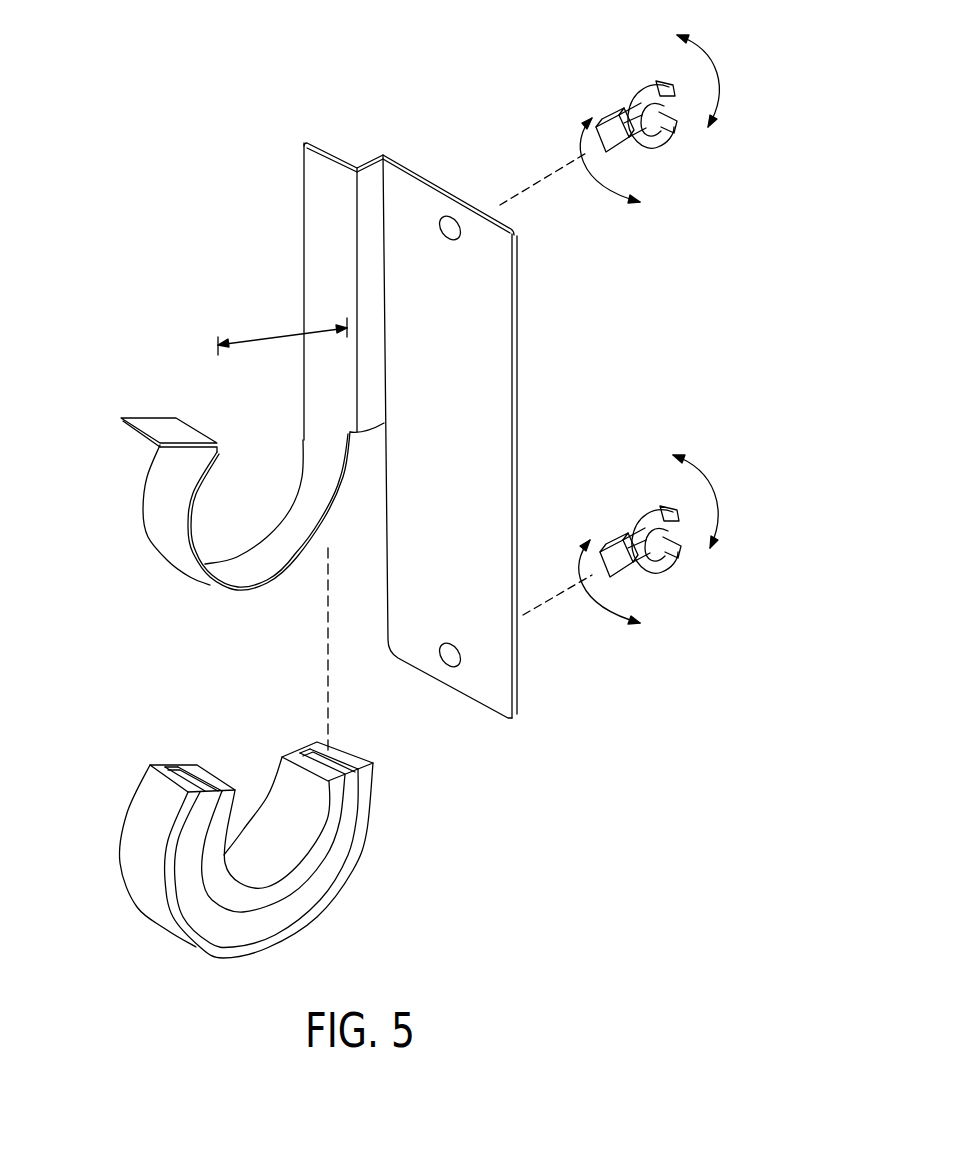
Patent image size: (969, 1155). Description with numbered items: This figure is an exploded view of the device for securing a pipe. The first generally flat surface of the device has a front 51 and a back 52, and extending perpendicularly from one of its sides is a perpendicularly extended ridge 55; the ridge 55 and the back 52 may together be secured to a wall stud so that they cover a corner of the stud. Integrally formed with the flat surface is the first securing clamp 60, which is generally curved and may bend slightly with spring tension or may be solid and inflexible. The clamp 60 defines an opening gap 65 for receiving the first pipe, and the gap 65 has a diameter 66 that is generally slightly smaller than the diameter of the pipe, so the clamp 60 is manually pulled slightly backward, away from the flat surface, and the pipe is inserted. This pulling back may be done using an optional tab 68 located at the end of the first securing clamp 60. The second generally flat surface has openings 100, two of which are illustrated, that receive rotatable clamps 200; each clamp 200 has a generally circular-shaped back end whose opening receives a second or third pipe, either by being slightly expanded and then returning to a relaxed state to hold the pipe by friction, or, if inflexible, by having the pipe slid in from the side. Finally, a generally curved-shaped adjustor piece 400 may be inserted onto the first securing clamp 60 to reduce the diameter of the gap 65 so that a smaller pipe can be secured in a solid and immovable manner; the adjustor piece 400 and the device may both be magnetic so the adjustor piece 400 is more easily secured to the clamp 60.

The front 51 is at (326, 207).
The back 52 is at (328, 150).
The perpendicularly extended ridge 55 is at (373, 191).
The first securing clamp 60 is at (170, 535).
The opening gap 65 is at (265, 452).
The diameter 66 is at (281, 336).
The tab 68 is at (158, 427).
The openings 100 is at (450, 243).
The rotatable clamps 200 is at (670, 138).
The adjustor piece 400 is at (137, 850).